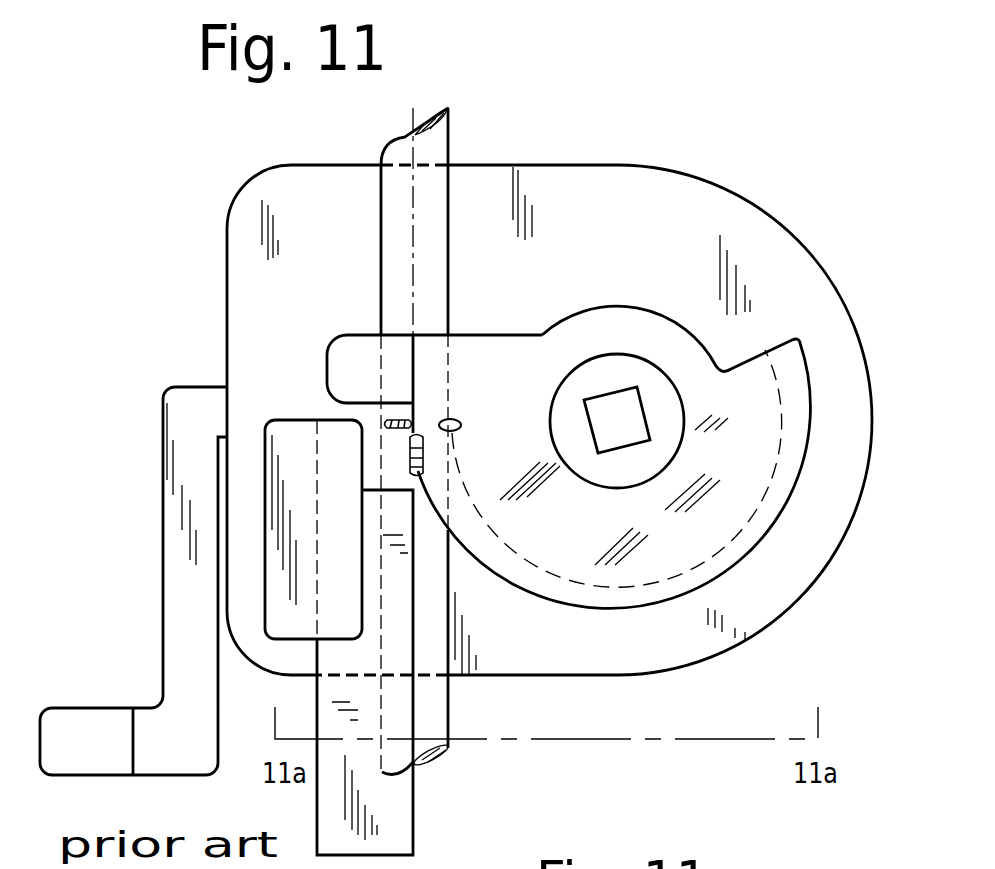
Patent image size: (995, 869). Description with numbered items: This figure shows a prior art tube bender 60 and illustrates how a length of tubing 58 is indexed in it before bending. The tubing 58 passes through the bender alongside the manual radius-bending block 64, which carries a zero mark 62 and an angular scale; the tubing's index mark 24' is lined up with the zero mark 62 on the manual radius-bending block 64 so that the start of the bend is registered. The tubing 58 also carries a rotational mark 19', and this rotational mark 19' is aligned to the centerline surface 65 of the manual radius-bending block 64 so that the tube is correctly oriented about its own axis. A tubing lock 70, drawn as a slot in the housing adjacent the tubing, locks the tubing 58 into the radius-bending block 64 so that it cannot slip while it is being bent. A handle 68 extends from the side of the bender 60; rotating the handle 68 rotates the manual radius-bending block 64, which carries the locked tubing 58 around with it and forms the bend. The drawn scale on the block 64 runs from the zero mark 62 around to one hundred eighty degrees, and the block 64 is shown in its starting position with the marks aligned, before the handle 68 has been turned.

The prior art tube bender 60 is at (227, 240).
The tubing 58 is at (378, 208).
The tubing lock 70 is at (353, 332).
The index mark 24' is at (329, 352).
The rotational mark 19' is at (325, 416).
The zero mark 62 is at (474, 410).
The manual radius-bending block 64 is at (670, 317).
The centerline surface 65 is at (750, 575).
The handle 68 is at (160, 540).